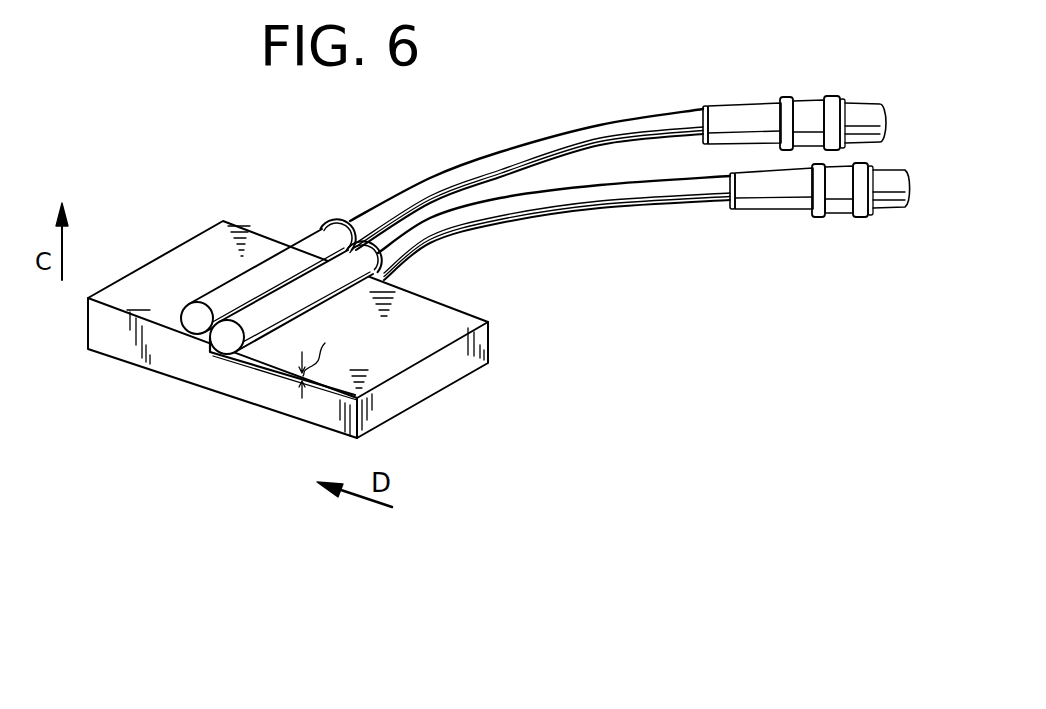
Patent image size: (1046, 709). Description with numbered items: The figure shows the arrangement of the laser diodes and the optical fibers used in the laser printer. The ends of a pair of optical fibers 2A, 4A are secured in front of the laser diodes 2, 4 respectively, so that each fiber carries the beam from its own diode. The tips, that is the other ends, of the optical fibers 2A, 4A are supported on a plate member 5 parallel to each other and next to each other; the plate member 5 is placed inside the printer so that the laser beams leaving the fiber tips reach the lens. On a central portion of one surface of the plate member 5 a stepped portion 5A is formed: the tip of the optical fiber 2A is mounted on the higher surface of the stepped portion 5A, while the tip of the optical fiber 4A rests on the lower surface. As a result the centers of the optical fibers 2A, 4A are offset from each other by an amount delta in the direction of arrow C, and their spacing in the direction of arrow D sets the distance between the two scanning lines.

The laser diode 2 is at (808, 113).
The optical fiber 2A is at (508, 156).
The laser diode 4 is at (838, 195).
The optical fiber 4A is at (525, 212).
The plate member 5 is at (432, 372).
The stepped portion 5A is at (208, 358).